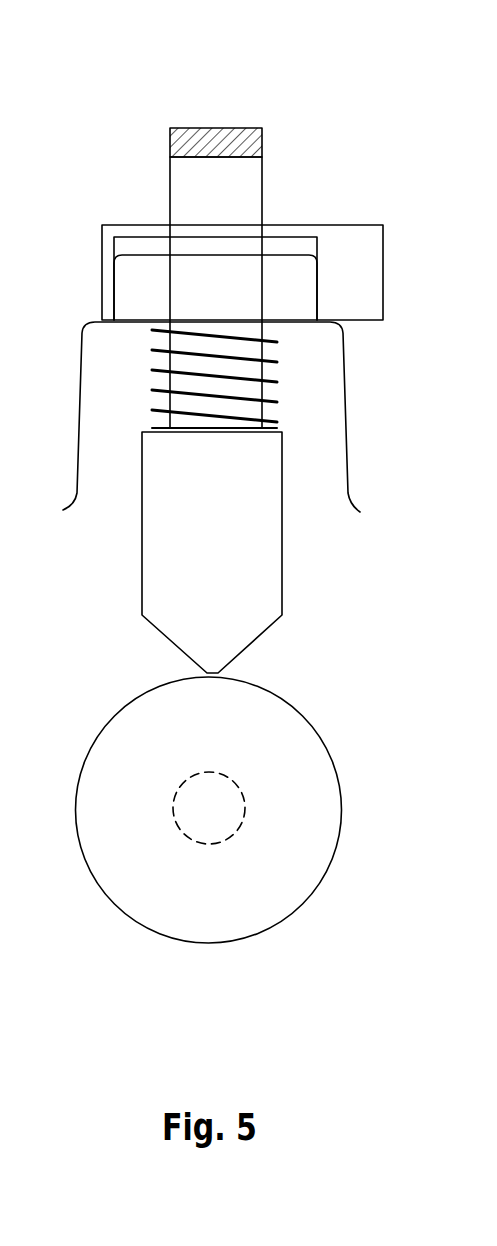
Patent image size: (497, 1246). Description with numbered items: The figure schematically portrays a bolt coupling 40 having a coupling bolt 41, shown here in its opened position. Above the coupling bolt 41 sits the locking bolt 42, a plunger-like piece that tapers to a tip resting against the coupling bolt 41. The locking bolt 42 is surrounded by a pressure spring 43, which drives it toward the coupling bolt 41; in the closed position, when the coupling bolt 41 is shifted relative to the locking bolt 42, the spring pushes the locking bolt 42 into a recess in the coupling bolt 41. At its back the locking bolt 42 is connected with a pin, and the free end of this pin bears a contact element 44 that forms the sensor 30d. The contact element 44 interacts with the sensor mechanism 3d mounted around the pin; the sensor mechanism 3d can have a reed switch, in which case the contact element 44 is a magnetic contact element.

The sensor mechanism 3d is at (392, 250).
The sensor 30d is at (197, 193).
The contact element 44 is at (215, 143).
The pressure spring 43 is at (200, 397).
The locking bolt 42 is at (263, 550).
The coupling bolt 41 is at (157, 898).
The bolt coupling 40 is at (325, 926).